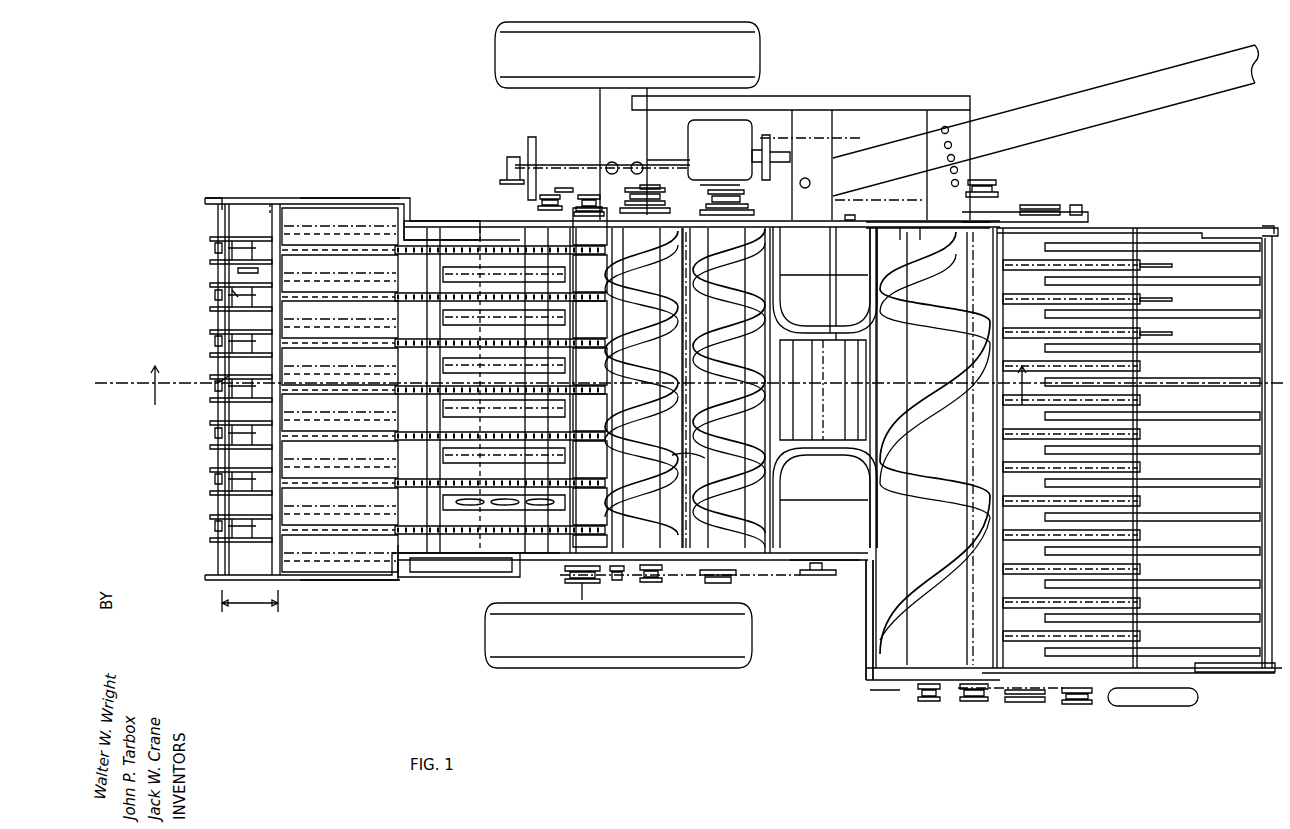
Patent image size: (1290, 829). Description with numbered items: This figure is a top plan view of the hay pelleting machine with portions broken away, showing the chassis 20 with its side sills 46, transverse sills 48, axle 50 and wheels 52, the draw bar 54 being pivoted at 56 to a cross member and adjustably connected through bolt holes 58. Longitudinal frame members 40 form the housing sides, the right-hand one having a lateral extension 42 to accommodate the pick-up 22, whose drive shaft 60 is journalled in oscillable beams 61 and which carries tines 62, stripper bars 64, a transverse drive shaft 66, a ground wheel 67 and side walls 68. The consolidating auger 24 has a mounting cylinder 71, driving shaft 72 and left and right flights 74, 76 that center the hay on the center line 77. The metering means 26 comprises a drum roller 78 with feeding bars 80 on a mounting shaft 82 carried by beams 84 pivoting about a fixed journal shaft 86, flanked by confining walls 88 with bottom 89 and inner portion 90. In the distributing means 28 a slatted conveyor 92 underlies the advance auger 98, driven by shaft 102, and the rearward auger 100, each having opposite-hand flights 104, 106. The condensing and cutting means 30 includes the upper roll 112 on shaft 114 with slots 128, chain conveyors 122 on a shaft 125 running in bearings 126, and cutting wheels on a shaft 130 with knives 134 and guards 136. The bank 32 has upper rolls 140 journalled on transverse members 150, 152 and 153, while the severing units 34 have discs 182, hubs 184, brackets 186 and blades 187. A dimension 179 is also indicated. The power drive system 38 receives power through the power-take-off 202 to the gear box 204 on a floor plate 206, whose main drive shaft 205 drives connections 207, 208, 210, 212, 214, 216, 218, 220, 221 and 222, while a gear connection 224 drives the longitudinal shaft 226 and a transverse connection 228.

The chassis 20 is at (1007, 75).
The pick-up 22 is at (1119, 718).
The consolidating auger 24 is at (934, 714).
The metering means 26 is at (826, 600).
The feed distributing means 28 is at (699, 606).
The condensing and cutting means 30 is at (503, 606).
The bank of hay roll forming units 32 is at (371, 597).
The pellet severing units 34 is at (251, 167).
The power drive system 38 is at (675, 156).
The longitudinally extending frame members 40 is at (390, 200).
The lateral extension 42 is at (866, 618).
The chassis frame side sills 46 is at (768, 96).
The chassis frame transverse sills 48 is at (930, 98).
The chassis axle 50 is at (600, 112).
The wheels 52 is at (500, 56).
The draw bar 54 is at (1112, 118).
The pivot 56 is at (812, 177).
The bolt holes 58 is at (958, 170).
The pick-up drive shaft 60 is at (1092, 700).
The oscillable beams 61 is at (1022, 700).
The tines 62 is at (1172, 300).
The stripper bars 64 is at (1118, 270).
The transverse drive shaft 66 is at (975, 701).
The ground running wheel 67 is at (1196, 702).
The confining side walls 68 is at (1218, 672).
The mounting cylinder 71 is at (915, 486).
The auger driving shaft 72 is at (925, 235).
The left-hand flights 74 is at (878, 290).
The right-hand flights 76 is at (897, 575).
The center line 77 is at (1238, 388).
The metering roller 78 is at (856, 338).
The peripheral feeding bars 80 is at (798, 338).
The mounting shaft 82 is at (818, 250).
The mounting beams 84 is at (838, 213).
The fixed journal shaft 86 is at (622, 232).
The hay confining walls 88 is at (824, 389).
The forwardly extended bottom 89 is at (876, 250).
The longitudinally extending inner wall portion 90 is at (852, 320).
The slatted feed conveyor 92 is at (693, 390).
The advance auger 98 is at (729, 388).
The rearward auger 100 is at (641, 383).
The auger drive shaft 102 is at (706, 232).
The auger flight 104 is at (696, 388).
The auger flight 106 is at (692, 455).
The upper condensing roll 112 is at (572, 240).
The upper roll drive shaft 114 is at (587, 386).
The chain conveyors 122 is at (460, 535).
The sprocket shaft 125 is at (424, 560).
The bearings 126 is at (445, 215).
The slots 128 is at (588, 475).
The cutting wheel shaft 130 is at (510, 182).
The cutting knives 134 is at (508, 504).
The annular guards 136 is at (504, 365).
The upper rolls 140 is at (306, 225).
The rear transverse frame member 150 is at (262, 200).
The rear transverse member 152 is at (215, 212).
The fourth cross member 153 is at (536, 560).
The dimension 179 is at (250, 601).
The cutting blade carrying discs 182 is at (222, 238).
The interconnecting hub 184 is at (230, 292).
The hub axle supporting bracket 186 is at (222, 382).
The cutting blades 187 is at (235, 270).
The power-take-off 202 is at (829, 135).
The gear box 204 is at (720, 152).
The main drive shaft 205 is at (734, 200).
The floor plate 206 is at (800, 110).
The chain and sprocket drive 207 is at (878, 212).
The pick-up chain and sprocket drive 208 is at (1042, 700).
The chain and sprocket connection 210 is at (940, 700).
The chain and sprocket connection 212 is at (650, 187).
The driving connection 214 is at (686, 575).
The driving connection 216 is at (778, 575).
The chain drive 218 is at (610, 205).
The set of gears 220 is at (575, 575).
The chain 221 is at (628, 574).
The step-up chain and sprocket connection 222 is at (550, 200).
The gear connection 224 is at (775, 126).
The longitudinally extending drive shaft 226 is at (556, 166).
The transverse chain and sprocket connection 228 is at (528, 146).